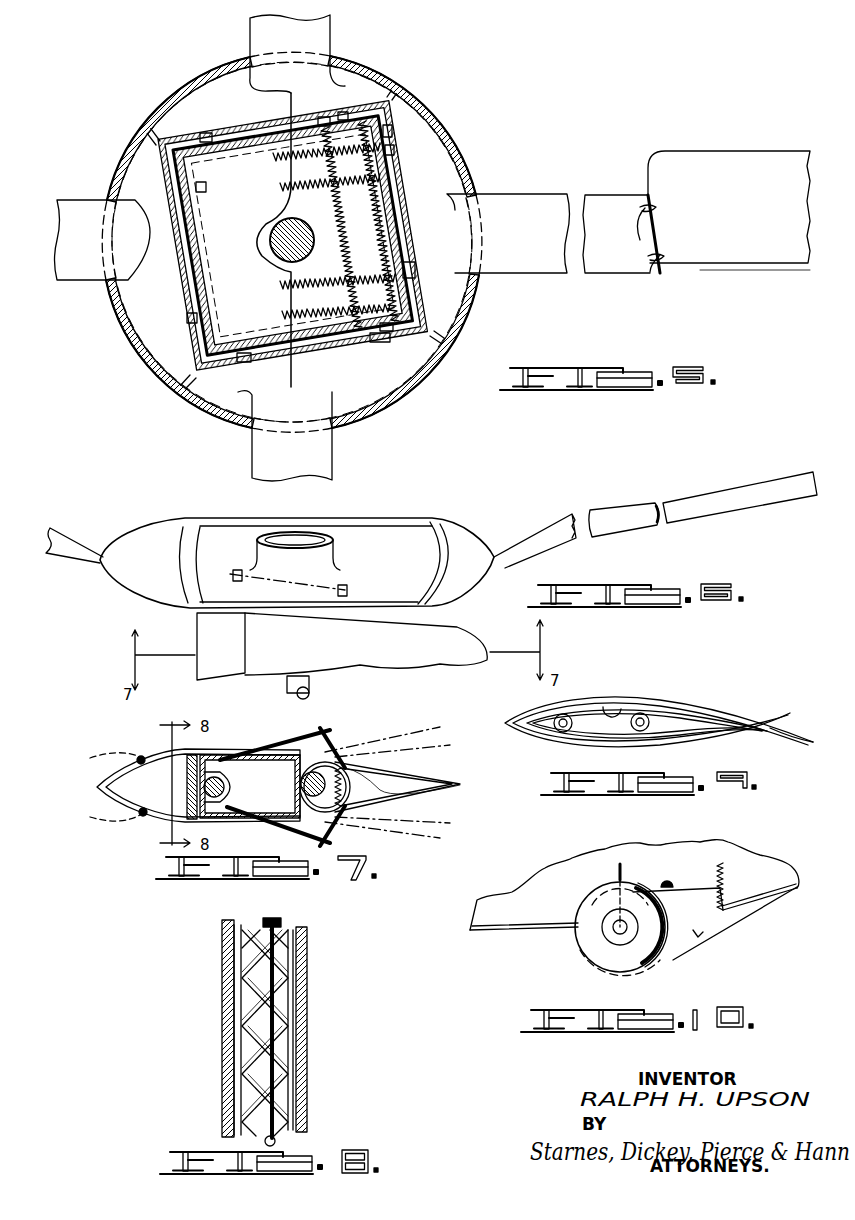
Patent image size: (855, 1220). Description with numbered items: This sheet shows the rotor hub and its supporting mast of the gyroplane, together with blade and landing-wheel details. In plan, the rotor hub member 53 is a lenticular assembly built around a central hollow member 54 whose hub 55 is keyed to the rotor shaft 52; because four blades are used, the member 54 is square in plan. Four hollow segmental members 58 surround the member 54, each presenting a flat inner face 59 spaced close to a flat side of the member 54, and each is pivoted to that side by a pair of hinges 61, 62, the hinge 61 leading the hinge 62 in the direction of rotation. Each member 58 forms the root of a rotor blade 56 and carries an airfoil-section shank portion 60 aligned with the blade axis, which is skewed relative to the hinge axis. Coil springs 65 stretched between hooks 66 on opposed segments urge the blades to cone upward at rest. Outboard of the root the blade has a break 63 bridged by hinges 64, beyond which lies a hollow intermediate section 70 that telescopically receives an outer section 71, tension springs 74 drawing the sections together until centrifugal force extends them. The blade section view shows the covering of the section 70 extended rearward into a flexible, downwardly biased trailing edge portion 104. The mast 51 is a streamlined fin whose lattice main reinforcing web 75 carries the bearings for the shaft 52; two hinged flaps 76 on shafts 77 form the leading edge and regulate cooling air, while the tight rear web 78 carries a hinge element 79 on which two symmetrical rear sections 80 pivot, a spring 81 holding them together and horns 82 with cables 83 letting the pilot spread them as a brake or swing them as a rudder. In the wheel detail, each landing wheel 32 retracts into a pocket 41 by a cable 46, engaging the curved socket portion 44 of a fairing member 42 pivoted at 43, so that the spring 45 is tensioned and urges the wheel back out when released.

In FIG. 10, the wheel 32 is at (597, 953).
In FIG. 10, the pocket 41 is at (578, 935).
In FIG. 10, the fairing member 42 is at (708, 933).
In FIG. 10, the pivot 43 is at (668, 884).
In FIG. 10, the curved socket portion 44 is at (653, 963).
In FIG. 10, the spring 45 is at (730, 880).
In FIG. 10, the cable 46 is at (614, 878).
In FIG. 6, the mast 51 is at (199, 686).
In FIG. 7, the mast 51 is at (224, 740).
In FIG. 8, the mast 51 is at (315, 954).
In FIG. 5, the shaft 52 is at (280, 262).
In FIG. 6, the shaft 52 is at (312, 686).
In FIG. 7, the shaft 52 is at (226, 790).
In FIG. 8, the shaft 52 is at (270, 920).
In FIG. 5, the rotor hub member 53 is at (455, 111).
In FIG. 6, the rotor hub member 53 is at (382, 515).
In FIG. 5, the central hollow member 54 is at (190, 320).
In FIG. 5, the hub 55 is at (268, 240).
In FIG. 5, the rotor blade 56 is at (339, 29).
In FIG. 6, the rotor blade 56 is at (77, 523).
In FIG. 5, the hollow segmental member 58 is at (378, 68).
In FIG. 5, the flat inner face 59 is at (212, 118).
In FIG. 5, the shank portion 60 is at (250, 30).
In FIG. 6, the shank portion 60 is at (524, 530).
In FIG. 5, the hinge 61 is at (326, 117).
In FIG. 6, the hinge 61 is at (232, 572).
In FIG. 5, the hinge 62 is at (208, 133).
In FIG. 6, the hinge 62 is at (380, 590).
In FIG. 5, the break 63 is at (660, 238).
In FIG. 5, the hinge 64 is at (643, 238).
In FIG. 6, the hinge 64 is at (662, 528).
In FIG. 5, the coil spring 65 is at (280, 160).
In FIG. 5, the hook 66 is at (392, 128).
In FIG. 5, the intermediate section 70 is at (760, 268).
In FIG. 6, the intermediate section 70 is at (733, 486).
In FIG. 9, the intermediate section 70 is at (588, 710).
In FIG. 9, the outer section 71 is at (626, 712).
In FIG. 9, the tension spring 74 is at (668, 712).
In FIG. 7, the main reinforcing web 75 is at (178, 790).
In FIG. 8, the main reinforcing web 75 is at (285, 1012).
In FIG. 7, the hinged flap 76 is at (82, 796).
In FIG. 7, the shaft 77 is at (140, 756).
In FIG. 7, the rear web 78 is at (282, 778).
In FIG. 7, the hinge element 79 is at (370, 830).
In FIG. 7, the rear fin section 80 is at (410, 770).
In FIG. 7, the spring 81 is at (344, 780).
In FIG. 7, the horn 82 is at (330, 732).
In FIG. 7, the cable 83 is at (285, 745).
In FIG. 9, the trailing edge portion 104 is at (765, 730).